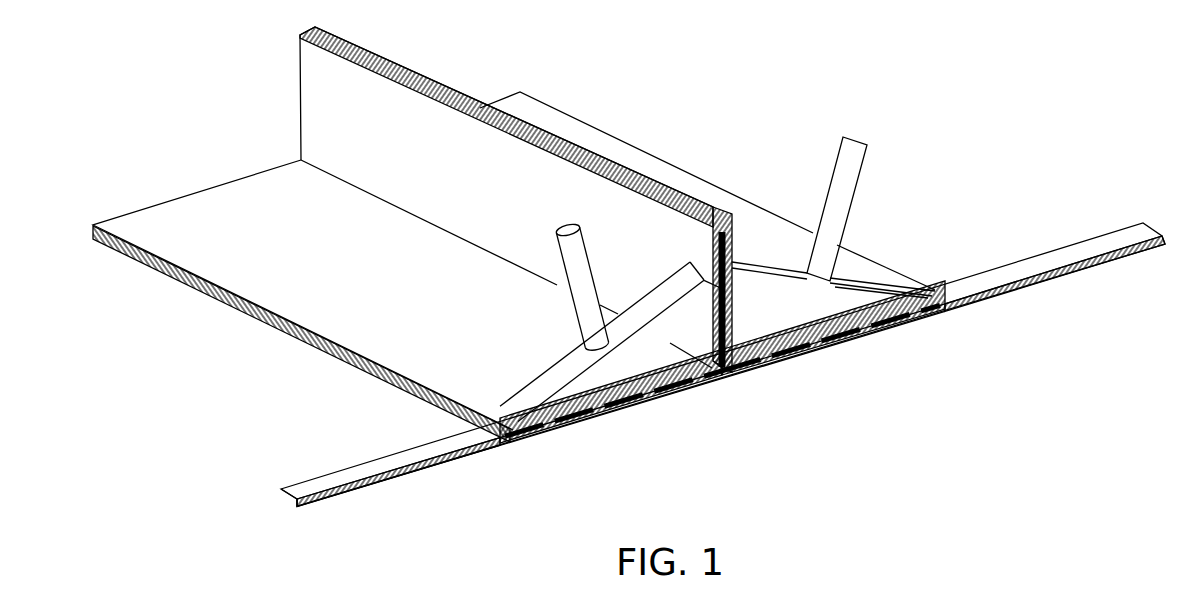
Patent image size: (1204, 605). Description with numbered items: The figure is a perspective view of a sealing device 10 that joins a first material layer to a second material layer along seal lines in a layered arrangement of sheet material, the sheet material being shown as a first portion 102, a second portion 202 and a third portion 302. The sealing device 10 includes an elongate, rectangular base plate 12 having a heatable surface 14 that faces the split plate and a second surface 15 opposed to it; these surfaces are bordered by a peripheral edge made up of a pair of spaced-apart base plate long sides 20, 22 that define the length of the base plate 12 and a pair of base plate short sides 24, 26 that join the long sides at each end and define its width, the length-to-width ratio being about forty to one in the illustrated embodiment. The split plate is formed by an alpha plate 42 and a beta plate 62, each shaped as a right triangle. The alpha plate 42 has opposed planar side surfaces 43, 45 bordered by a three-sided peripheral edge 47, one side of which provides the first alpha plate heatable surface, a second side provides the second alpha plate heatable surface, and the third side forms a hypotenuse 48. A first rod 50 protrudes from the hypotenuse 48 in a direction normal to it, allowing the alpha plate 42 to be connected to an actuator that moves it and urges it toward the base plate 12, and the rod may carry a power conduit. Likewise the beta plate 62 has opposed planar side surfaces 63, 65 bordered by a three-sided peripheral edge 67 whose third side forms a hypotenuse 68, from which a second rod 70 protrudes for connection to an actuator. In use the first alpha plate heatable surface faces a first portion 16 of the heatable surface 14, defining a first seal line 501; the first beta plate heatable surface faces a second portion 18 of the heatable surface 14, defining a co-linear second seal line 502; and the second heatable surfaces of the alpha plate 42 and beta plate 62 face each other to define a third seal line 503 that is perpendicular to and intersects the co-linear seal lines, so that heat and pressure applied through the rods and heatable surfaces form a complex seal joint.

The sealing device 10 is at (987, 149).
The base plate 12 is at (463, 448).
The heatable surface 14 is at (367, 470).
The second surface 15 is at (412, 477).
The first portion of the base heatable surface 16 is at (608, 416).
The second portion of the base heatable surface 18 is at (815, 352).
The base plate long side 20 is at (302, 484).
The base plate long side 22 is at (353, 492).
The base plate short side 24 is at (292, 499).
The base plate short side 26 is at (1062, 249).
The alpha plate 42 is at (714, 385).
The planar side surface 43 is at (727, 370).
The planar side surface 45 is at (575, 352).
The peripheral edge 47 is at (542, 383).
The hypotenuse 48 is at (714, 285).
The first rod 50 is at (557, 245).
The beta plate 62 is at (840, 297).
The planar side surface 63 is at (910, 279).
The planar side surface 65 is at (883, 278).
The peripheral edge 67 is at (770, 267).
The hypotenuse 68 is at (832, 282).
The second rod 70 is at (862, 165).
The first portion 102 is at (337, 312).
The second portion 202 is at (627, 148).
The third portion 302 is at (728, 378).
The first seal line 501 is at (568, 427).
The second seal line 502 is at (887, 333).
The third seal line 503 is at (713, 298).